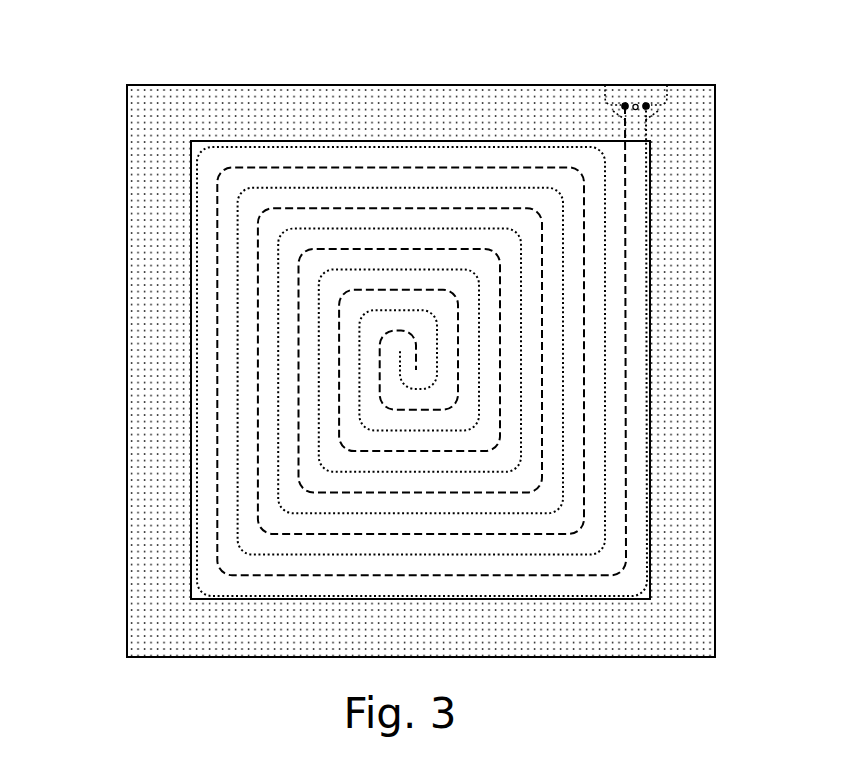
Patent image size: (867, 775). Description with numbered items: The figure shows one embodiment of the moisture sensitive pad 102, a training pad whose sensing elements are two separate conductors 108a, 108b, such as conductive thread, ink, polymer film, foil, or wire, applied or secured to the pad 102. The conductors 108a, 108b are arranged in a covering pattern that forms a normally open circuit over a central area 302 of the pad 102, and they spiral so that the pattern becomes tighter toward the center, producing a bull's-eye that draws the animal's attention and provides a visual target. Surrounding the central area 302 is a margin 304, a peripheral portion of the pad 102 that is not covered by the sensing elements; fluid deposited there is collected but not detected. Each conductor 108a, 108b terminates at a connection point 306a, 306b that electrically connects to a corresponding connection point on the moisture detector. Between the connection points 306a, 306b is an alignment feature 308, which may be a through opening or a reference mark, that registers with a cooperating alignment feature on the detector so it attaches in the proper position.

The moisture sensitive pad 102 is at (98, 69).
The first conductor 108a is at (197, 595).
The second conductor 108b is at (216, 395).
The central area 302 is at (347, 156).
The margin 304 is at (692, 310).
The first connection point 306a is at (647, 104).
The second connection point 306b is at (624, 104).
The alignment feature 308 is at (634, 104).